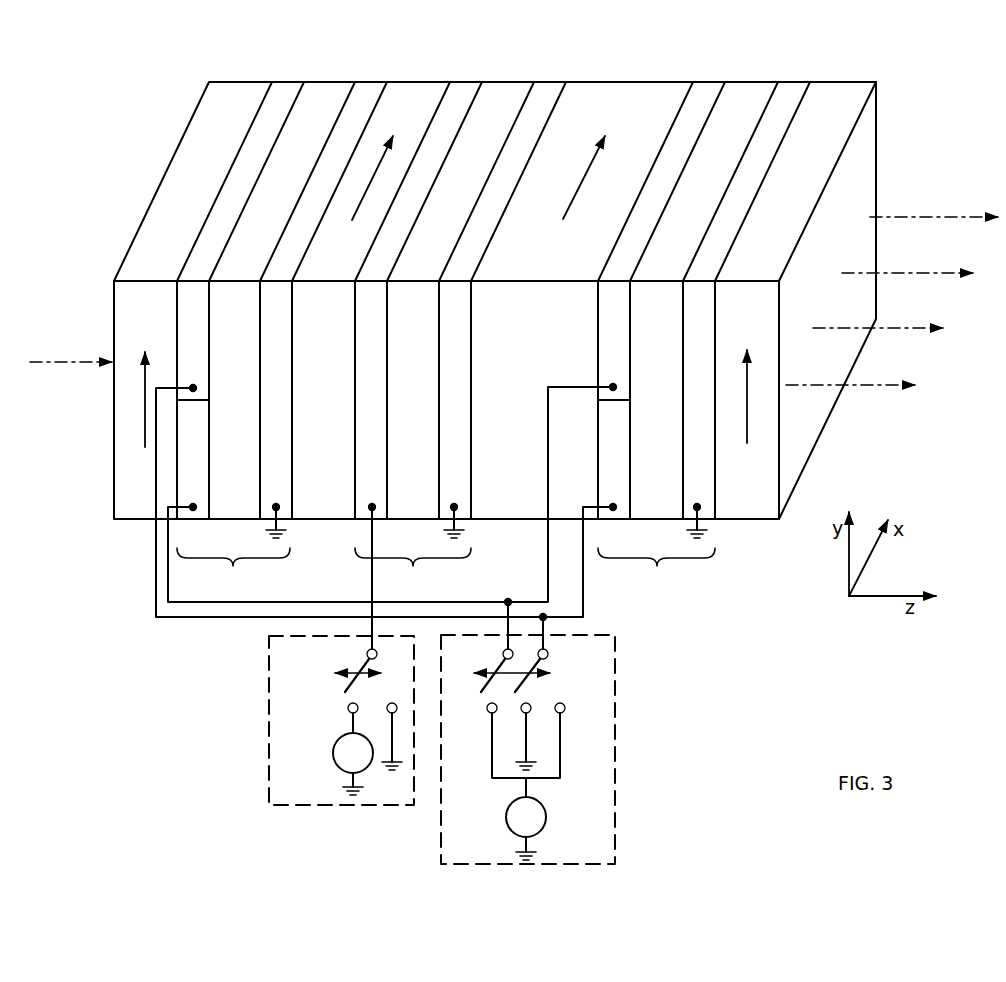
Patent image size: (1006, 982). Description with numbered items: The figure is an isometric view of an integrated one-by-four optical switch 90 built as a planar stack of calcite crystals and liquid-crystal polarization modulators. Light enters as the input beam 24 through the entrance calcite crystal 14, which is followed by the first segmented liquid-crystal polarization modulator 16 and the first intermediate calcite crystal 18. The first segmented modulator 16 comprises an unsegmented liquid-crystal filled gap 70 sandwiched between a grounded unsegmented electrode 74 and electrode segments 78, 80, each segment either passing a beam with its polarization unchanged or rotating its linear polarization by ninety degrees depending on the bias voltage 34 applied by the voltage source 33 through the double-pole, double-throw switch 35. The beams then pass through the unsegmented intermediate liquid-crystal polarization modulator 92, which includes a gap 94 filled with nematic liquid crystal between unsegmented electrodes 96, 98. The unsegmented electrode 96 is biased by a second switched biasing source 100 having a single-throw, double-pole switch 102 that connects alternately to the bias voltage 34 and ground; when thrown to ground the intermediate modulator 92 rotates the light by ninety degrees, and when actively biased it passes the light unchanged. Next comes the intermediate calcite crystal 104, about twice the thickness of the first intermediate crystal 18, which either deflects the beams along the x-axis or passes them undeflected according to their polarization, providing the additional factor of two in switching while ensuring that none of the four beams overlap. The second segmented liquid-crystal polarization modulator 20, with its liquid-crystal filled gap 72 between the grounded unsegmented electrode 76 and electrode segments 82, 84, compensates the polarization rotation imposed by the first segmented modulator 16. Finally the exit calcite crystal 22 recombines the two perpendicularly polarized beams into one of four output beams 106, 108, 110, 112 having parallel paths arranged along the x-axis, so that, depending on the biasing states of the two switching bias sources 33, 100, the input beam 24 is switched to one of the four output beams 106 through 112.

The entrance calcite crystal 14 is at (238, 92).
The first intermediate calcite crystal 18 is at (413, 90).
The intermediate calcite crystal 104 is at (623, 90).
The exit calcite crystal 22 is at (838, 90).
The first segmented liquid-crystal polarization modulator 16 is at (234, 437).
The unsegmented intermediate liquid-crystal polarization modulator 92 is at (413, 437).
The second segmented liquid-crystal polarization modulator 20 is at (656, 437).
The liquid-crystal filled gap 70 is at (233, 423).
The gap 94 is at (413, 423).
The liquid-crystal filled gap 72 is at (657, 422).
The electrode segment 80 is at (185, 343).
The electrode segment 78 is at (183, 492).
The electrode segment 84 is at (598, 340).
The electrode segment 82 is at (600, 440).
The grounded unsegmented electrode 74 is at (283, 436).
The unsegmented electrode 96 is at (363, 420).
The unsegmented electrode 98 is at (461, 437).
The grounded unsegmented electrode 76 is at (705, 436).
The input beam 24 is at (86, 362).
The output beam 106 is at (875, 383).
The output beam 108 is at (900, 327).
The output beam 110 is at (926, 272).
The output beam 112 is at (950, 215).
The electrokinetic pump device 90 is at (866, 462).
The second switched biasing source 100 is at (269, 705).
The single-throw, double-pole switch 102 is at (365, 660).
The voltage source 33 is at (615, 763).
The double-pole, double-throw switch 35 is at (501, 660).
The bias voltage 34 is at (333, 742).